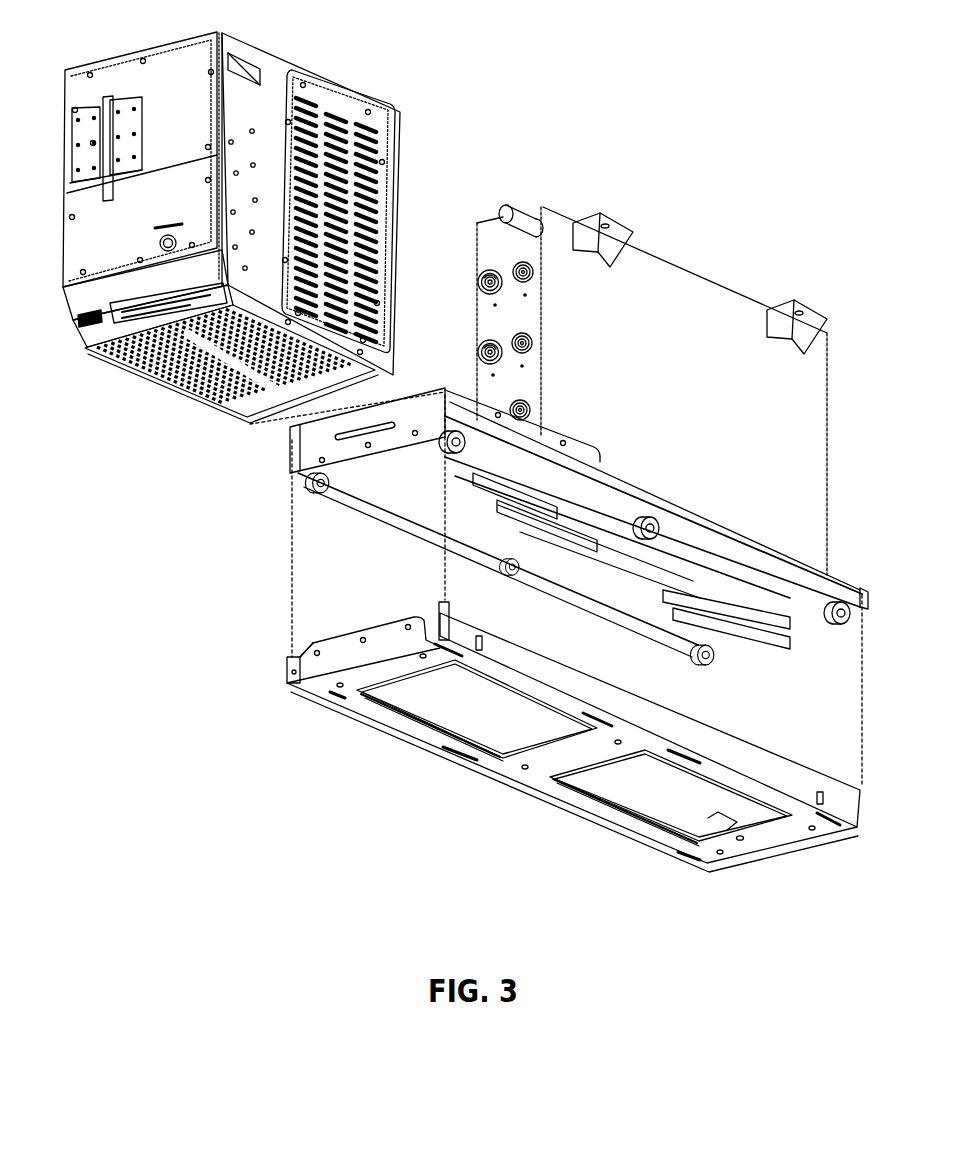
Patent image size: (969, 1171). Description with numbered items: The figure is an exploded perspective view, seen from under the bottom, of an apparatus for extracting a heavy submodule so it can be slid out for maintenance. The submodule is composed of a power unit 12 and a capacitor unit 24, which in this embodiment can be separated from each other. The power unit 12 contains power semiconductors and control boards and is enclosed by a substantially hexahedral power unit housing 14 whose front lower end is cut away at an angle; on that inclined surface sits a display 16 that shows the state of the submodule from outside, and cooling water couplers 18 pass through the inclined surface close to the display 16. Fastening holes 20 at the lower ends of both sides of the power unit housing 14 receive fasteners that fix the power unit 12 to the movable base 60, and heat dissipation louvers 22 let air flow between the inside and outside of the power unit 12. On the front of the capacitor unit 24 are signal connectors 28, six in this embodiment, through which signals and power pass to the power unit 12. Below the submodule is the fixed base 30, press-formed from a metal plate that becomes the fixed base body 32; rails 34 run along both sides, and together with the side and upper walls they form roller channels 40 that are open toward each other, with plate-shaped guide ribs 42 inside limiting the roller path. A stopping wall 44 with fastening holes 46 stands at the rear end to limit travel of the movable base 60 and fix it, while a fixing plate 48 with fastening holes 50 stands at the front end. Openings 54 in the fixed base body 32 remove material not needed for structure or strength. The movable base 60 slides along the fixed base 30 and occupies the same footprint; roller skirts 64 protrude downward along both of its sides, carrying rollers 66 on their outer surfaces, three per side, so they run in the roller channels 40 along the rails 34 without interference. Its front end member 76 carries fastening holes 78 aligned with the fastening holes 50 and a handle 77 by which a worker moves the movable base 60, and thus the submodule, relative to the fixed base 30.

The power unit 12 is at (368, 93).
The power unit housing 14 is at (273, 66).
The display 16 is at (178, 305).
The cooling water couplers 18 is at (88, 335).
The fastening holes 20 is at (290, 322).
The heat dissipation louvers 22 is at (348, 150).
The capacitor unit 24 is at (718, 280).
The signal connectors 28 is at (483, 280).
The fixed base 30 is at (513, 746).
The fixed base body 32 is at (757, 840).
The rails 34 is at (790, 783).
The roller channels 40 is at (305, 653).
The guide ribs 42 is at (437, 633).
The stopping wall 44 is at (740, 842).
The fastening holes 46 is at (723, 827).
The fixing plate 48 is at (352, 661).
The fastening holes 50 is at (299, 684).
The openings 54 is at (500, 727).
The movable base 60 is at (286, 478).
The roller skirts 64 is at (762, 571).
The rollers 66 is at (648, 520).
The front end member 76 is at (303, 447).
The handle 77 is at (357, 440).
The fastening holes 78 is at (312, 494).